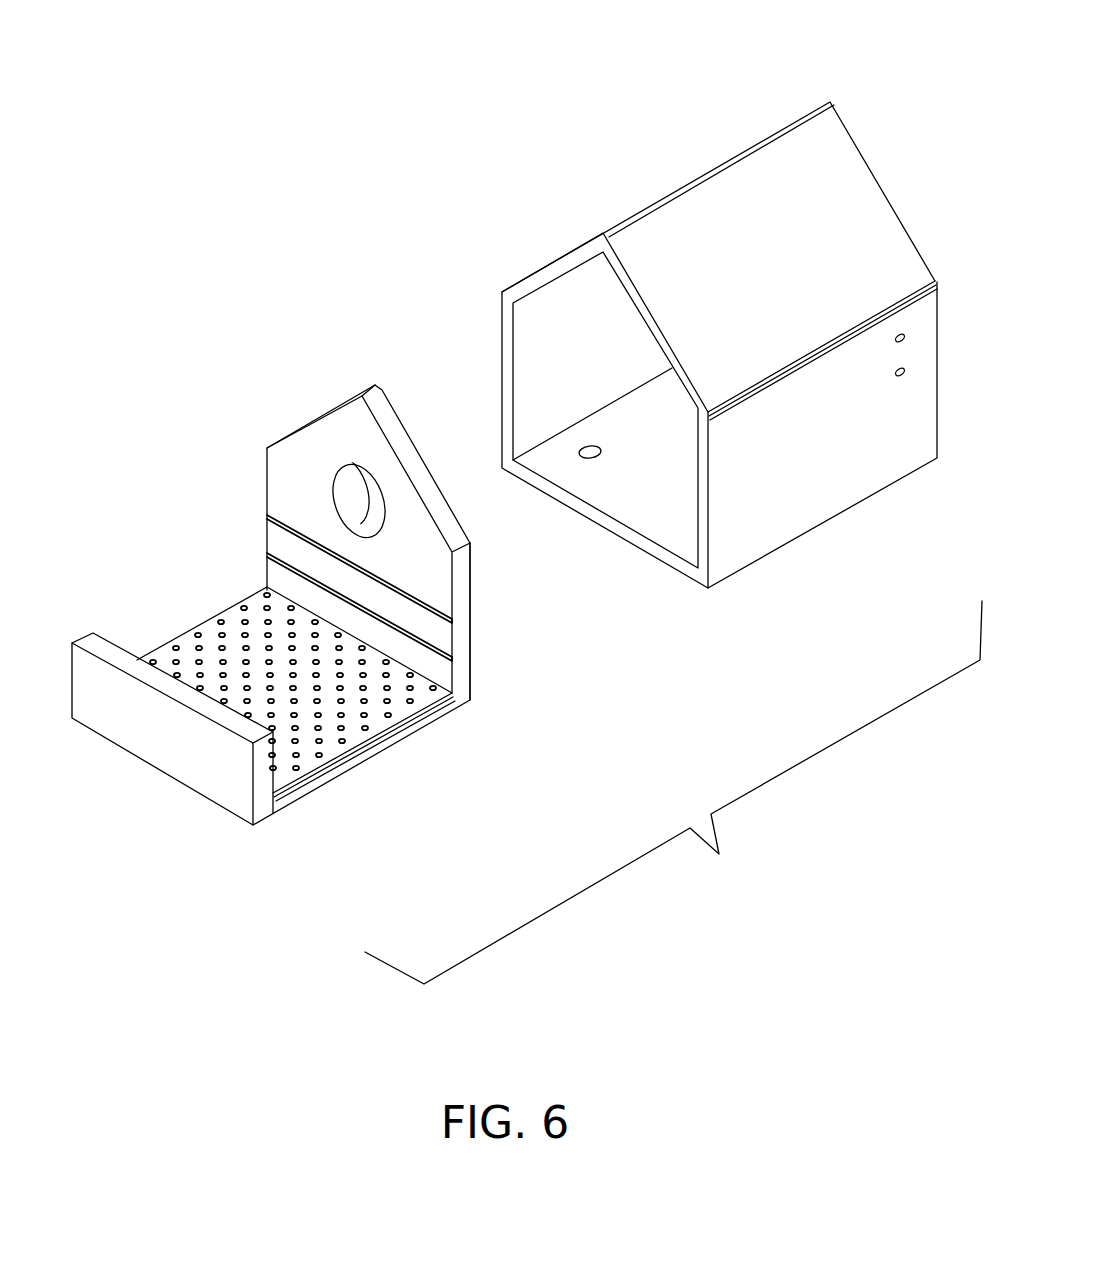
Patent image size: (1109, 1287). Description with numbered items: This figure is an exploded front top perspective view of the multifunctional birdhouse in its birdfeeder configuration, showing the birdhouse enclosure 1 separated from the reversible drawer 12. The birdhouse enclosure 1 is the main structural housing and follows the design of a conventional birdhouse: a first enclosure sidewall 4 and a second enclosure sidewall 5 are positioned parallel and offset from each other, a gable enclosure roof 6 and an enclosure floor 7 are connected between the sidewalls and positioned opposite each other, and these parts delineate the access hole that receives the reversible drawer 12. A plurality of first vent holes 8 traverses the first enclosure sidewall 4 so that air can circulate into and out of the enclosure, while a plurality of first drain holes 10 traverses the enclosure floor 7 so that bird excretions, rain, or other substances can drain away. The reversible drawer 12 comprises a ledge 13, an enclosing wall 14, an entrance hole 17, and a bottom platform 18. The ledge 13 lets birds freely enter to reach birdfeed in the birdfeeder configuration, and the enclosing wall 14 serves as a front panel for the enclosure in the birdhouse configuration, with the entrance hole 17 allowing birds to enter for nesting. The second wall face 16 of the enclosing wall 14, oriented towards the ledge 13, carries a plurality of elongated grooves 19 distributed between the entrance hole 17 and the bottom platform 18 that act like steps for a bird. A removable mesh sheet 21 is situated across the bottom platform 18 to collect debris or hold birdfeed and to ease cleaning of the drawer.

The birdhouse enclosure 1 is at (578, 62).
The first enclosure sidewall 4 is at (855, 490).
The second enclosure sidewall 5 is at (520, 345).
The gable enclosure roof 6 is at (865, 178).
The enclosure floor 7 is at (615, 527).
The plurality of first vent holes 8 is at (892, 340).
The plurality of first drain holes 10 is at (594, 446).
The reversible drawer 12 is at (175, 328).
The ledge 13 is at (200, 775).
The enclosing wall 14 is at (461, 645).
The second wall face 16 is at (431, 568).
The entrance hole 17 is at (353, 502).
The bottom platform 18 is at (410, 723).
The plurality of elongated grooves 19 is at (263, 515).
The mesh sheet 21 is at (353, 737).